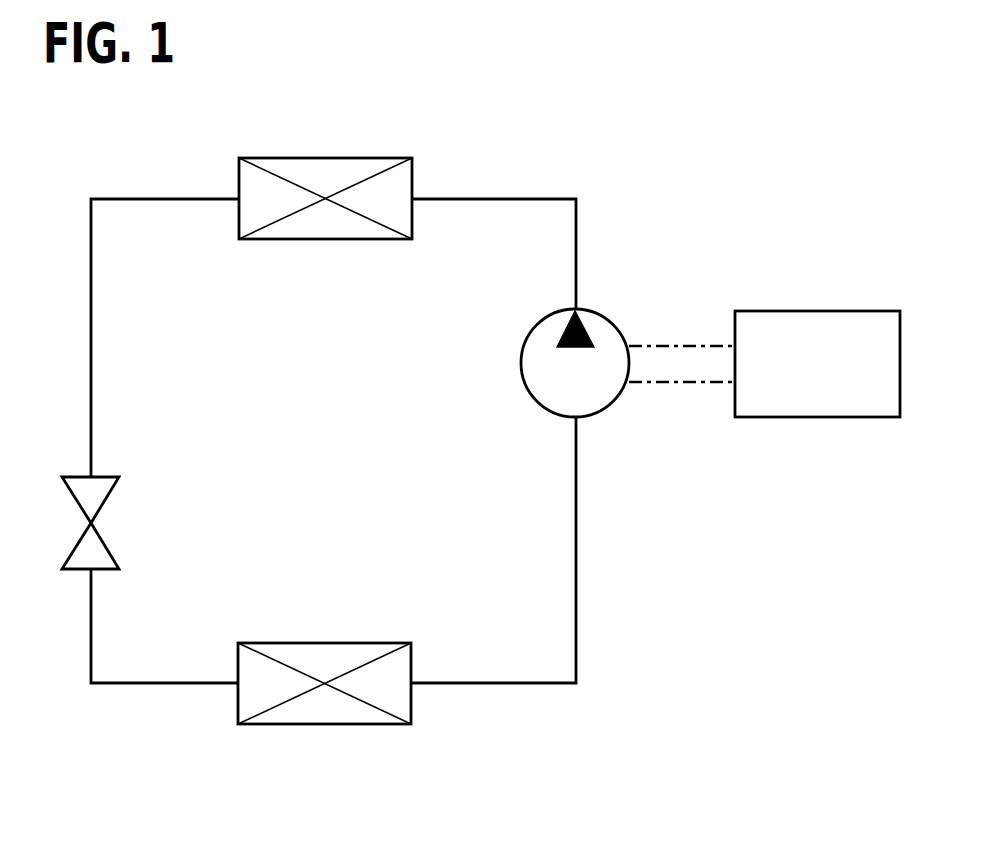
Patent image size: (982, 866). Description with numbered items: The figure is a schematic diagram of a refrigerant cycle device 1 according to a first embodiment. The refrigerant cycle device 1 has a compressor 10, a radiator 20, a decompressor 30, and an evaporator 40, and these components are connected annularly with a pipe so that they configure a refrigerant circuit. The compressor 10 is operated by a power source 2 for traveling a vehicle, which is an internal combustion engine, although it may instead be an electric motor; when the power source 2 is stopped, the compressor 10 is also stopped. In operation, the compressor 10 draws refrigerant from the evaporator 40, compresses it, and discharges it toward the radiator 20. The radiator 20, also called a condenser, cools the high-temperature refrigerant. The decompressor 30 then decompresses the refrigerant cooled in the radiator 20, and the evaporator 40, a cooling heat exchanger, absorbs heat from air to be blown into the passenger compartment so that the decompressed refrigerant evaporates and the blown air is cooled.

The refrigerant cycle device 1 is at (522, 142).
The power source 2 is at (847, 311).
The compressor 10 is at (612, 317).
The radiator 20 is at (288, 158).
The decompressor 30 is at (76, 477).
The evaporator 40 is at (363, 724).